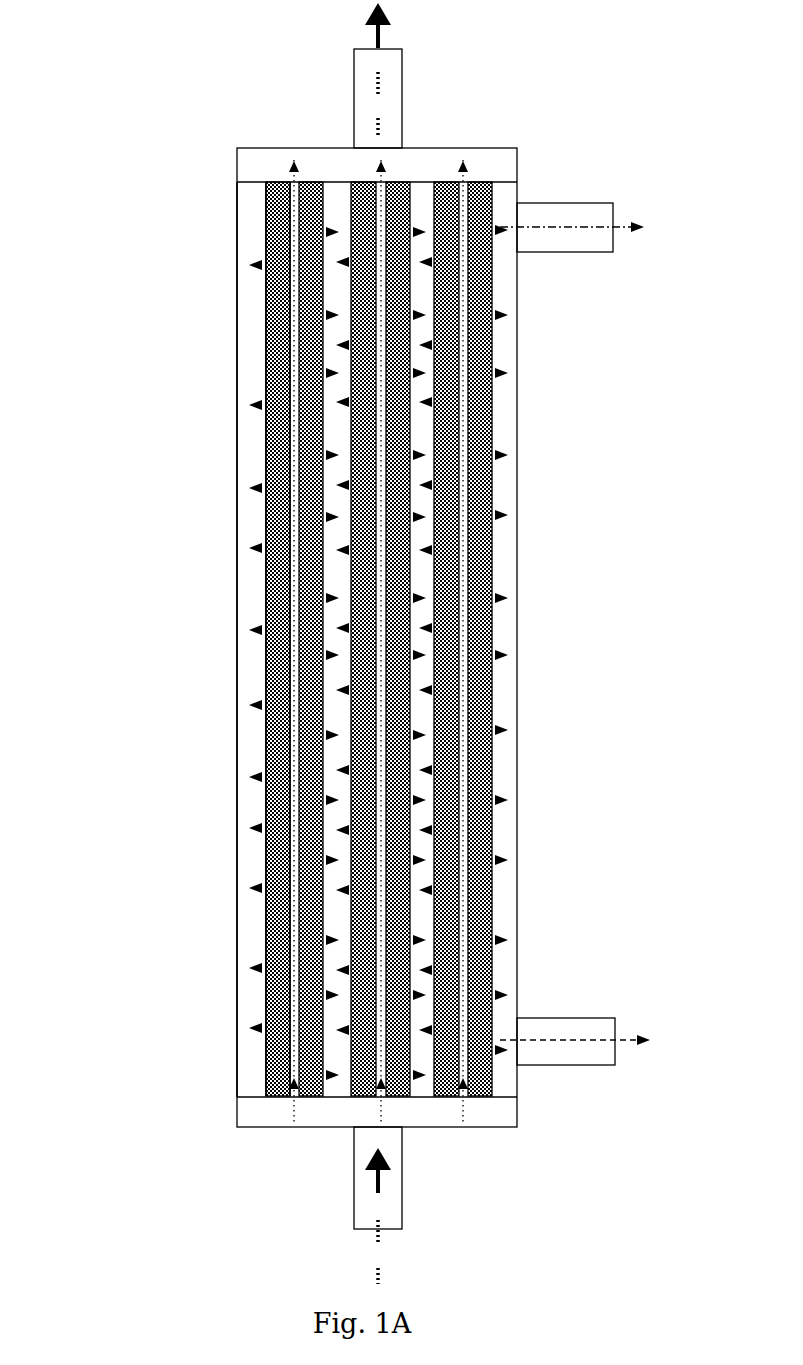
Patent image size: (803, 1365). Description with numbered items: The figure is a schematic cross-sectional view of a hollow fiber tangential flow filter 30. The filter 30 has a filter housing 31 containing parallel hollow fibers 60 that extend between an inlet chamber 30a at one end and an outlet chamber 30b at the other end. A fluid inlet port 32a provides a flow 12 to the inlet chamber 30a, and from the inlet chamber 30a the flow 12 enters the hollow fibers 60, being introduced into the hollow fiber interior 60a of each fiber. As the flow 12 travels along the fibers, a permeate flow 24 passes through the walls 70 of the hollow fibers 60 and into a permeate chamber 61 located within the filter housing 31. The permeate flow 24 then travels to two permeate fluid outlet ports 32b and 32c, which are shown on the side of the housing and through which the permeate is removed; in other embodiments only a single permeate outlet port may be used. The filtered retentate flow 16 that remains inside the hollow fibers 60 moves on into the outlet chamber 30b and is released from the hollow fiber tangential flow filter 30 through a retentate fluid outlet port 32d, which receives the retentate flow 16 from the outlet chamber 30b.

The flow 12 is at (368, 1240).
The retentate flow 16 is at (355, 78).
The permeate flow 24 is at (625, 225).
The hollow fiber tangential flow filter 30 is at (165, 510).
The inlet chamber 30a is at (255, 1110).
The outlet chamber 30b is at (255, 168).
The filter housing 31 is at (237, 612).
The fluid inlet port 32a is at (358, 1157).
The permeate fluid outlet port 32b is at (545, 1028).
The permeate fluid outlet port 32c is at (557, 210).
The retentate fluid outlet port 32d is at (398, 97).
The hollow fibers 60 is at (272, 296).
The hollow fiber interior 60a is at (270, 250).
The permeate chamber 61 is at (255, 903).
The walls 70 is at (270, 327).